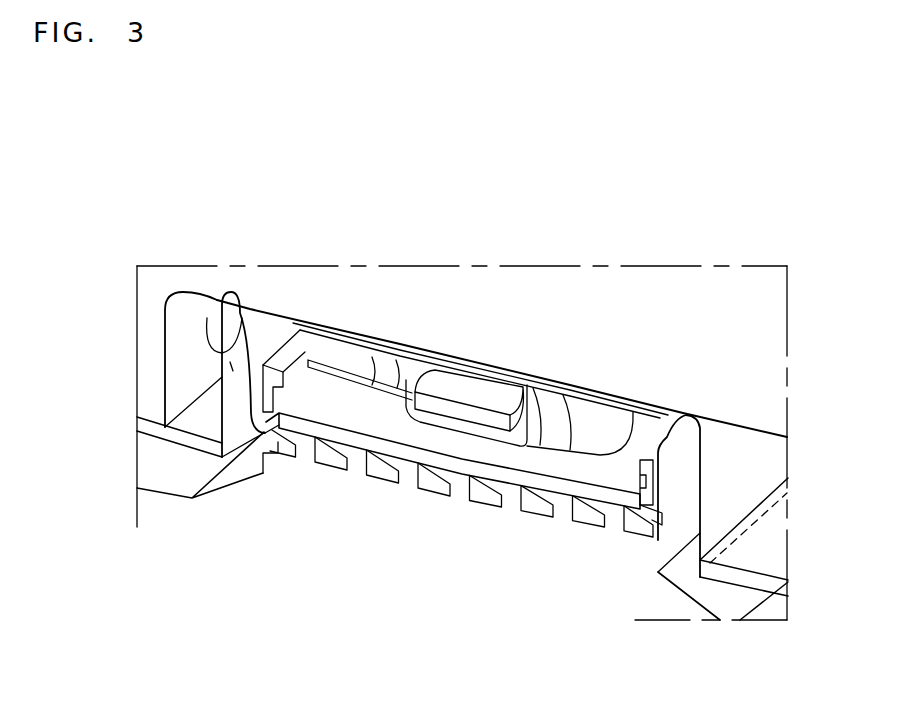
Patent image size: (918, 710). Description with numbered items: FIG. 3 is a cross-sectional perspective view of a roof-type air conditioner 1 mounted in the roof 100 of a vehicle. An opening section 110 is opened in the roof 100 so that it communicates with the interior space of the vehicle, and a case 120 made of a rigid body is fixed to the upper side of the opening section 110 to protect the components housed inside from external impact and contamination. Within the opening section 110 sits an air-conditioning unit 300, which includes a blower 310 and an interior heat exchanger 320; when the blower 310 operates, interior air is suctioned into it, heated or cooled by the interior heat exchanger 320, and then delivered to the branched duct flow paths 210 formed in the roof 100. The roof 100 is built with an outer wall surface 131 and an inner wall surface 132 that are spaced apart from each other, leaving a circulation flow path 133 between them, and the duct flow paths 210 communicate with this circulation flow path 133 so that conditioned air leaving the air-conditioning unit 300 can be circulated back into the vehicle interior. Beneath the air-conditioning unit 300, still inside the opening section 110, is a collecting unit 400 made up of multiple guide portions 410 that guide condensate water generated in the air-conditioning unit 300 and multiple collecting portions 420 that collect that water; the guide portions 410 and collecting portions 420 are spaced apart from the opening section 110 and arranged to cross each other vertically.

The roof-type air conditioner 1 is at (625, 252).
The roof 100 is at (419, 478).
The opening section 110 is at (573, 537).
The case 120 is at (155, 331).
The outer wall surface 131 is at (228, 382).
The inner wall surface 132 is at (207, 325).
The circulation flow path 133 is at (232, 367).
The duct flow paths 210 is at (170, 477).
The air-conditioning unit 300 is at (417, 303).
The blower 310 is at (465, 418).
The interior heat exchanger 320 is at (367, 440).
The collecting unit 400 is at (459, 515).
The guide portions 410 is at (452, 496).
The collecting portions 420 is at (493, 507).